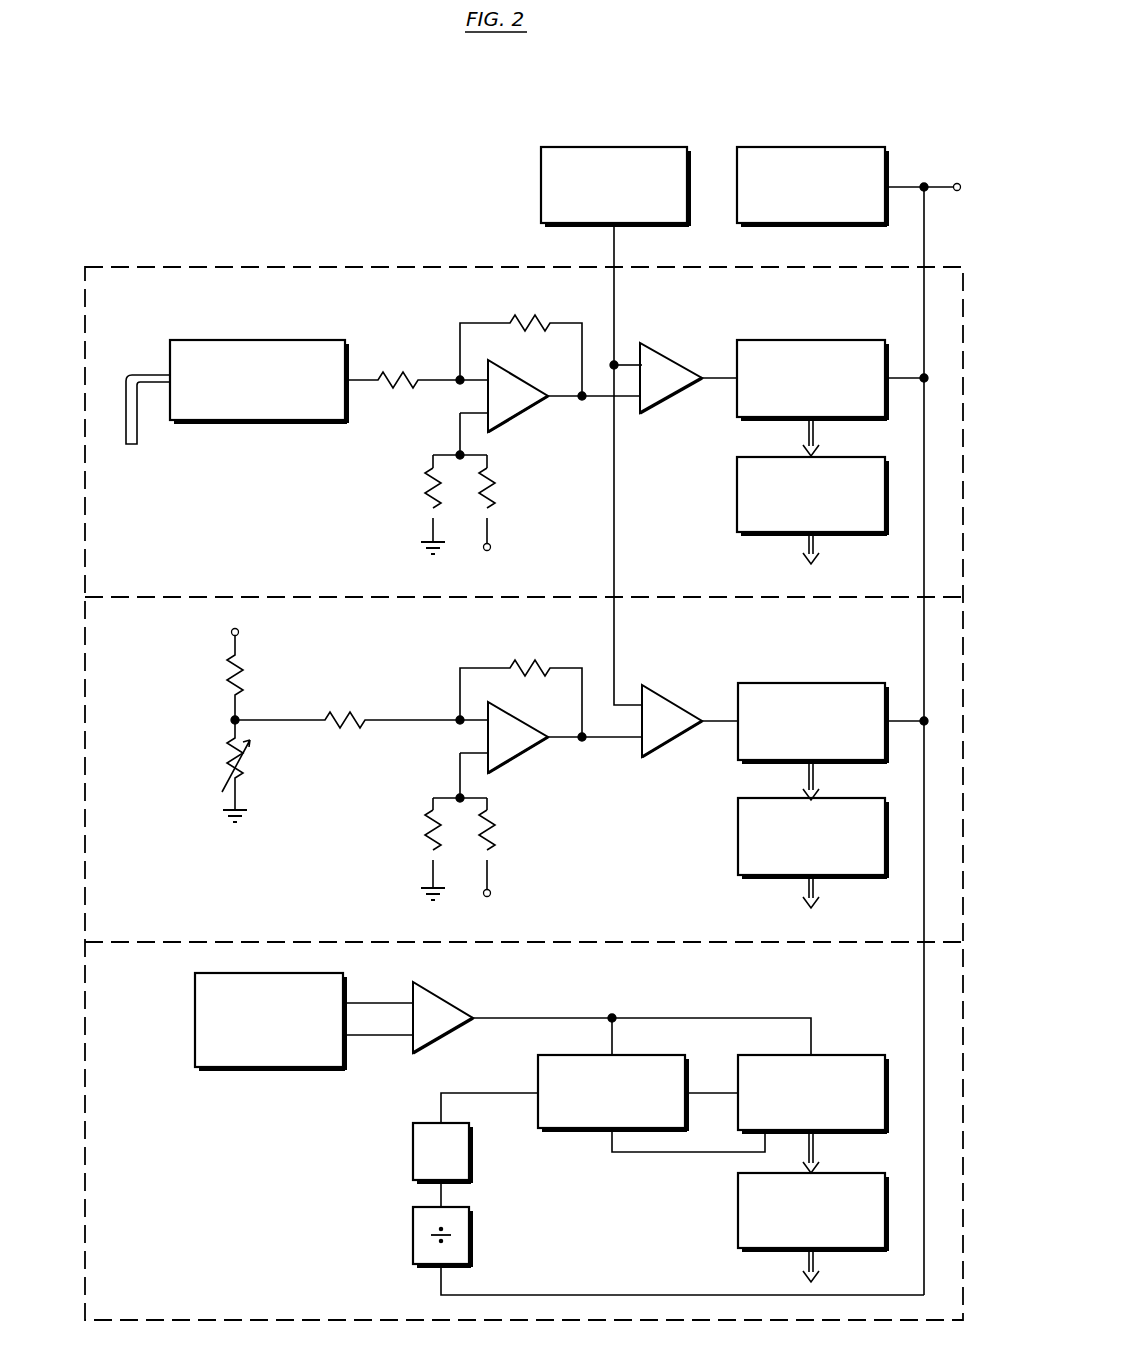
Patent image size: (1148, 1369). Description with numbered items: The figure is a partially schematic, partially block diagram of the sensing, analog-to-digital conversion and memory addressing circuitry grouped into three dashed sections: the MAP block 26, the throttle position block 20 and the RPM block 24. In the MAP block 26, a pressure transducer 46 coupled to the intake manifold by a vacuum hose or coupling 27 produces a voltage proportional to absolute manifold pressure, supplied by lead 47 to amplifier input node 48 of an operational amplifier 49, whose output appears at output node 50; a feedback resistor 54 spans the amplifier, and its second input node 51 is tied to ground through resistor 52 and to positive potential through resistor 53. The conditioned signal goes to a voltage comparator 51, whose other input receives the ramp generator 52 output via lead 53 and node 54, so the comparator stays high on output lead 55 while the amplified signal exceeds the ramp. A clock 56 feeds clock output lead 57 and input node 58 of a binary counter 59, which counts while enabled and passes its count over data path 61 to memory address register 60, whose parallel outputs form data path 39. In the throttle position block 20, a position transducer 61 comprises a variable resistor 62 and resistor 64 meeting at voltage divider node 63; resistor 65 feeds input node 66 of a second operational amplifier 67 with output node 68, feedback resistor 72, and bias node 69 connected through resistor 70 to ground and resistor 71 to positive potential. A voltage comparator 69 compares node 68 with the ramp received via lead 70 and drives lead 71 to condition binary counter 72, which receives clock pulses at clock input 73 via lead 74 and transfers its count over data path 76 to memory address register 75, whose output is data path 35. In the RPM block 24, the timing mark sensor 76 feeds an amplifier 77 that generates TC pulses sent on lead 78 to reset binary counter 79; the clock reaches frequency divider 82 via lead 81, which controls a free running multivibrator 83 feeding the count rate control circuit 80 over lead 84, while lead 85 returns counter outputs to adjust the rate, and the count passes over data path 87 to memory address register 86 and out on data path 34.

The throttle position block 20 is at (84, 698).
The RPM block 24 is at (84, 1003).
The MAP block 26 is at (84, 338).
The vacuum hose or coupling 27 is at (132, 444).
The data path 34 is at (800, 1264).
The data path 35 is at (816, 885).
The data path 39 is at (816, 544).
The pressure transducer 46 is at (252, 340).
The lead 47 is at (394, 374).
The amplifier input node 48 is at (457, 378).
The operational amplifier 49 is at (508, 412).
The amplifier output node 50 is at (582, 400).
The voltage comparator 51 is at (659, 348).
The ramp generator 52 is at (562, 147).
The lead 53 is at (614, 244).
The node 54 is at (520, 320).
The output lead 55 is at (716, 378).
The clock 56 is at (768, 147).
The clock output lead 57 is at (924, 222).
The input node 58 is at (926, 376).
The binary counter 59 is at (822, 340).
The memory address register 60 is at (737, 470).
The data path 61 is at (816, 432).
The variable resistor 62 is at (240, 776).
The voltage divider node 63 is at (232, 718).
The resistor 64 is at (230, 674).
The resistor 65 is at (353, 710).
The input node 66 is at (455, 716).
The operational amplifier 67 is at (508, 753).
The output node 68 is at (582, 740).
The voltage comparator 69 is at (456, 796).
The lead 70 is at (614, 637).
The lead 71 is at (708, 735).
The binary counter 72 is at (524, 661).
The clock input 73 is at (920, 716).
The lead 74 is at (924, 650).
The memory address register 75 is at (738, 827).
The data path 76 is at (816, 775).
The amplifier 77 is at (448, 1002).
The lead 78 is at (711, 1016).
The binary counter 79 is at (860, 1055).
The count rate control circuit 80 is at (660, 1066).
The lead 81 is at (924, 1290).
The frequency divider 82 is at (413, 1235).
The free running multivibrator 83 is at (413, 1155).
The lead 84 is at (487, 1092).
The lead 85 is at (661, 1169).
The memory address register 86 is at (738, 1234).
The data path 87 is at (821, 1150).